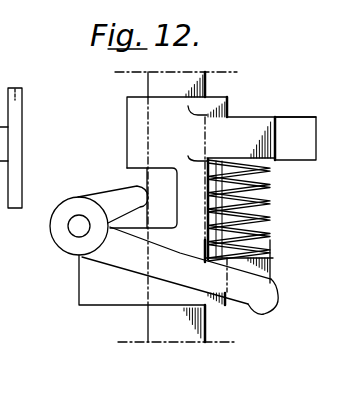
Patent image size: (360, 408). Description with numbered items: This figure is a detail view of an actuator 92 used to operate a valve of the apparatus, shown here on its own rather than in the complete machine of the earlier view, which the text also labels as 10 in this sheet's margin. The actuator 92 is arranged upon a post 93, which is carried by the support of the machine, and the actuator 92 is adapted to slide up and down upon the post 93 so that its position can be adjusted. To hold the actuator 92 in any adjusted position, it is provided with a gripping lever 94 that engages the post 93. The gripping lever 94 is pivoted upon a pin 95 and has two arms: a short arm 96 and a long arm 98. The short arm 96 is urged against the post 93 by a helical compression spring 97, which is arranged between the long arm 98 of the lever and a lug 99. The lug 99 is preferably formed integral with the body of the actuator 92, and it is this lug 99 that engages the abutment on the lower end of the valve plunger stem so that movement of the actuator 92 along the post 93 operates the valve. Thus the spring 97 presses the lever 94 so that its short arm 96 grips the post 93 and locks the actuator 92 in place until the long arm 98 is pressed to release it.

The frame 10 is at (15, 88).
The actuator 92 is at (197, 207).
The post 93 is at (166, 341).
The gripping lever 94 is at (176, 265).
The pin 95 is at (78, 227).
The short arm 96 is at (118, 197).
The helical compression spring 97 is at (271, 216).
The long arm 98 is at (263, 306).
The lug 99 is at (283, 138).